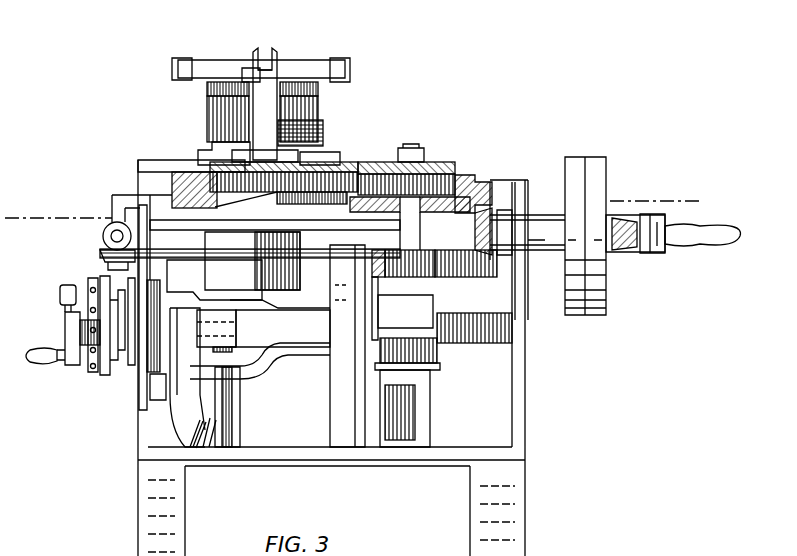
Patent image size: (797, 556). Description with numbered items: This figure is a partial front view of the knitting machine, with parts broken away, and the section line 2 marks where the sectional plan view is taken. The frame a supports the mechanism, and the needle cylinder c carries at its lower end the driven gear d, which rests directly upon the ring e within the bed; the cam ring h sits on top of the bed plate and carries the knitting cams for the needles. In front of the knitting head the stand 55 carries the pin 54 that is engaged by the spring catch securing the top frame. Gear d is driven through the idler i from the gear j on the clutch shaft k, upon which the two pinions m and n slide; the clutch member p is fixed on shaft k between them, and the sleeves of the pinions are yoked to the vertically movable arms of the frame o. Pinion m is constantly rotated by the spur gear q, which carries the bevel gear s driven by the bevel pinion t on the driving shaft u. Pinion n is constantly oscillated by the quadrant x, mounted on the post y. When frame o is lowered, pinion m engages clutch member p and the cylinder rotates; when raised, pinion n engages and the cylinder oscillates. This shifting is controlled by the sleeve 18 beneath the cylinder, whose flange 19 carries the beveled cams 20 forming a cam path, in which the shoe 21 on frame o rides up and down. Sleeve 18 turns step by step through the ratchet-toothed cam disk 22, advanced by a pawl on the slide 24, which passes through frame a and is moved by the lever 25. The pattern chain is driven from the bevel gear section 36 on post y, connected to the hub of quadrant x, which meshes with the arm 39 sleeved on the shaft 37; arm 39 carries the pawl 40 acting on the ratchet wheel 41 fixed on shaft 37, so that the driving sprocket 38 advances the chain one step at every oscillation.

The frame a is at (138, 496).
The section line 2— 2 is at (352, 195).
The stand 55 is at (257, 78).
The pin 54 is at (268, 56).
The needle cylinder c is at (207, 100).
The cam ring h is at (198, 136).
The ring e is at (180, 164).
The cam disk 22 is at (166, 215).
The driven gear d is at (318, 170).
The idler i is at (362, 172).
The gear j is at (426, 176).
The clutch shaft k is at (460, 180).
The bevel pinion t is at (492, 208).
The driving shaft u is at (542, 222).
The bevel gear s is at (448, 258).
The lever 25 is at (120, 226).
The slide 24 is at (102, 239).
The sleeve 18 is at (205, 240).
The flange 19 is at (212, 290).
The cams 20 is at (234, 331).
The shoe 21 is at (280, 323).
The quadrant x is at (282, 348).
The frame o is at (340, 342).
The pinion m is at (430, 274).
The clutch member p is at (436, 300).
The pinion n is at (437, 350).
The spur gear q is at (500, 268).
The shaft 37 is at (65, 322).
The driving sprocket 38 is at (88, 366).
The ratchet wheel 41 is at (152, 356).
The pawl 40 is at (155, 380).
The arm 39 is at (176, 410).
The bevel gear section 36 is at (212, 430).
The post y is at (230, 406).